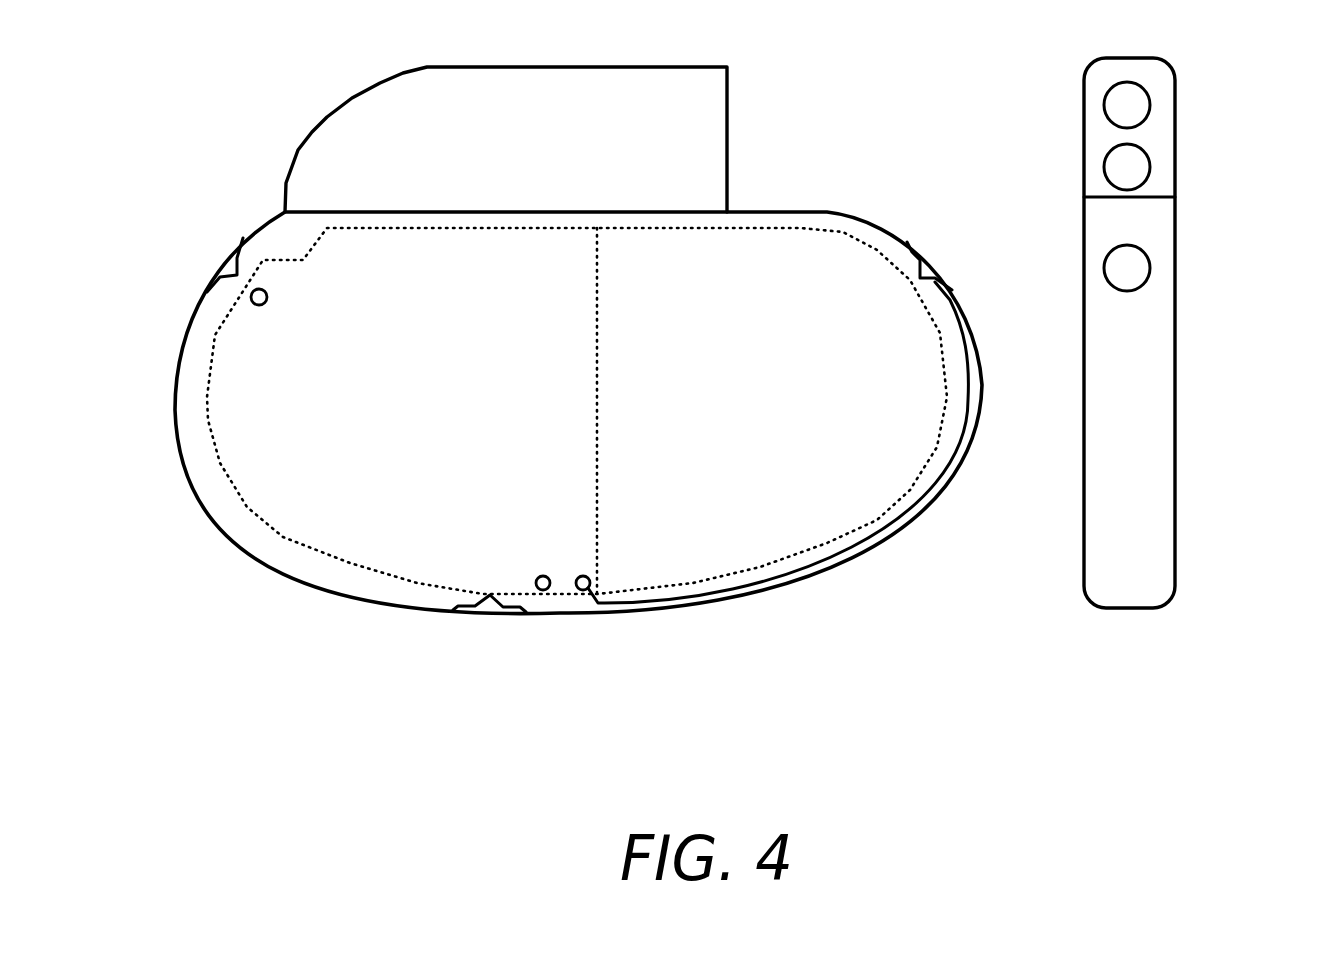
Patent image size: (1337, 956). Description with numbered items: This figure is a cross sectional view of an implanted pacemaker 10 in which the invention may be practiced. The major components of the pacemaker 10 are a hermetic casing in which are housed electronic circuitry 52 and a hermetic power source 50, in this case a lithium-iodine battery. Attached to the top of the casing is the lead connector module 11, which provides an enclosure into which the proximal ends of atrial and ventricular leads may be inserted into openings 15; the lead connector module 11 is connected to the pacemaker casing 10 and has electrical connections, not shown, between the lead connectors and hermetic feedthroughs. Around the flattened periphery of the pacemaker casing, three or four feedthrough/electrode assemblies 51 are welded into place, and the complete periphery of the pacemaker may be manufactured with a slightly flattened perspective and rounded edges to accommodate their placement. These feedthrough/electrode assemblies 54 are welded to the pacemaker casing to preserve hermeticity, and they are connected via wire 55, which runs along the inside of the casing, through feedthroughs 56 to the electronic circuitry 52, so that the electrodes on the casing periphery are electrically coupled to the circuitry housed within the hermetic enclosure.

The implanted pacemaker 10 is at (183, 328).
The lead connector module 11 is at (337, 112).
The openings 15 is at (1150, 165).
The hermetic power source 50 is at (780, 258).
The feedthrough/electrode assemblies 51 is at (1150, 265).
The electronic circuitry 52 is at (362, 493).
The feedthrough/electrode assemblies 54 is at (232, 250).
The wire 55 is at (853, 548).
The feedthroughs 56 is at (252, 305).